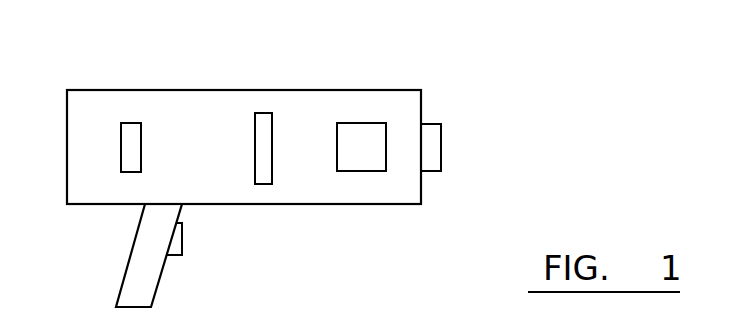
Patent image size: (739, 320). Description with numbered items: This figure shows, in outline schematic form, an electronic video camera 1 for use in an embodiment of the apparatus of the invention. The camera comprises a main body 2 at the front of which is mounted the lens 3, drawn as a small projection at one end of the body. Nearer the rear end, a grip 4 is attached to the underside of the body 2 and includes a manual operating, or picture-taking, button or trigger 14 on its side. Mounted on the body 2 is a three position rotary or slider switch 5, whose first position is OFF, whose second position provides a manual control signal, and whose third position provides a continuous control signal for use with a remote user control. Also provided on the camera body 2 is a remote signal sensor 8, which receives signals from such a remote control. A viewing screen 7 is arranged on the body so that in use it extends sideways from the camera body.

The video camera 1 is at (281, 76).
The main body 2 is at (184, 160).
The lens 3 is at (430, 148).
The grip 4 is at (142, 268).
The three position rotary or slider switch 5 is at (131, 142).
The viewing screen 7 is at (265, 125).
The remote signal sensor 8 is at (362, 145).
The manual operating button or trigger 14 is at (183, 240).